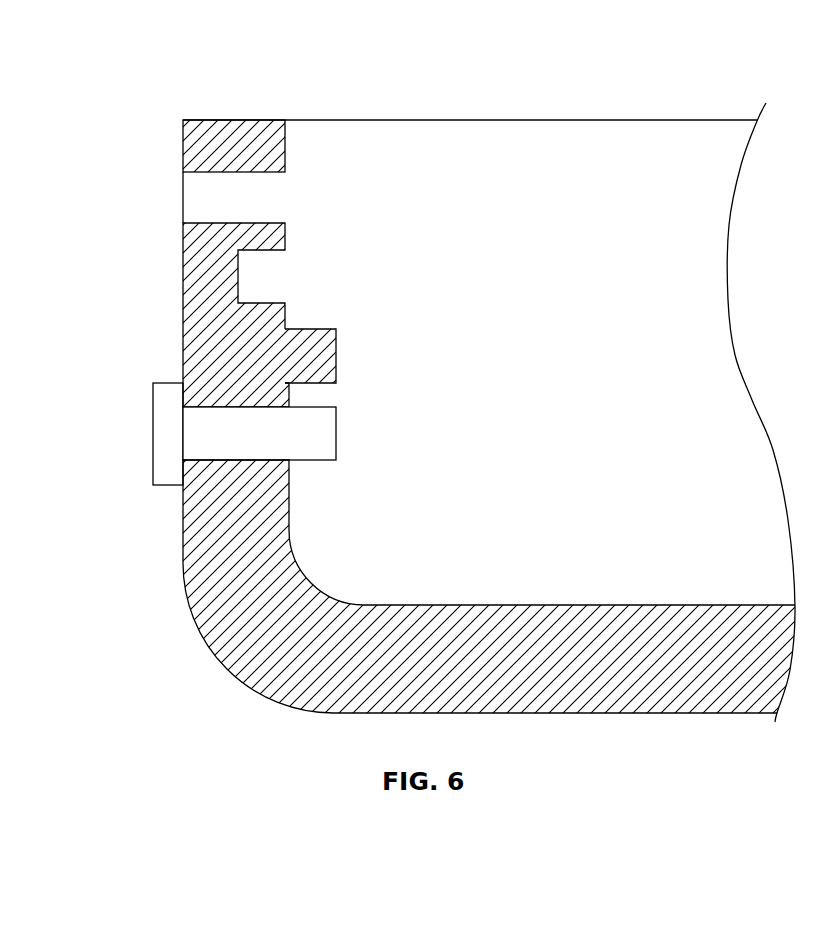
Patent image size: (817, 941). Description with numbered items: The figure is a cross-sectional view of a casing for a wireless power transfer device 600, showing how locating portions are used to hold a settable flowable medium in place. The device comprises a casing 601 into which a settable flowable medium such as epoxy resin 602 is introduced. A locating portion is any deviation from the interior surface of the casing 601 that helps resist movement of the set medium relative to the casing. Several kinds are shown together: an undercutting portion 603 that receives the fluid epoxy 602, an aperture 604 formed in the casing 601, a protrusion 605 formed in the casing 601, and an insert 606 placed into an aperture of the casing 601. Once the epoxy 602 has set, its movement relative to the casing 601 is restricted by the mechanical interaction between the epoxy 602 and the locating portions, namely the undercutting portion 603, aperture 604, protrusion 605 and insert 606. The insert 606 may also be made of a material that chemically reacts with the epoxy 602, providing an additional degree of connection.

The wireless power transfer device 600 is at (217, 46).
The casing 601 is at (247, 680).
The epoxy resin 602 is at (548, 146).
The undercutting portion 603 is at (259, 303).
The aperture 604 is at (183, 195).
The protrusion 605 is at (337, 357).
The insert 606 is at (337, 433).